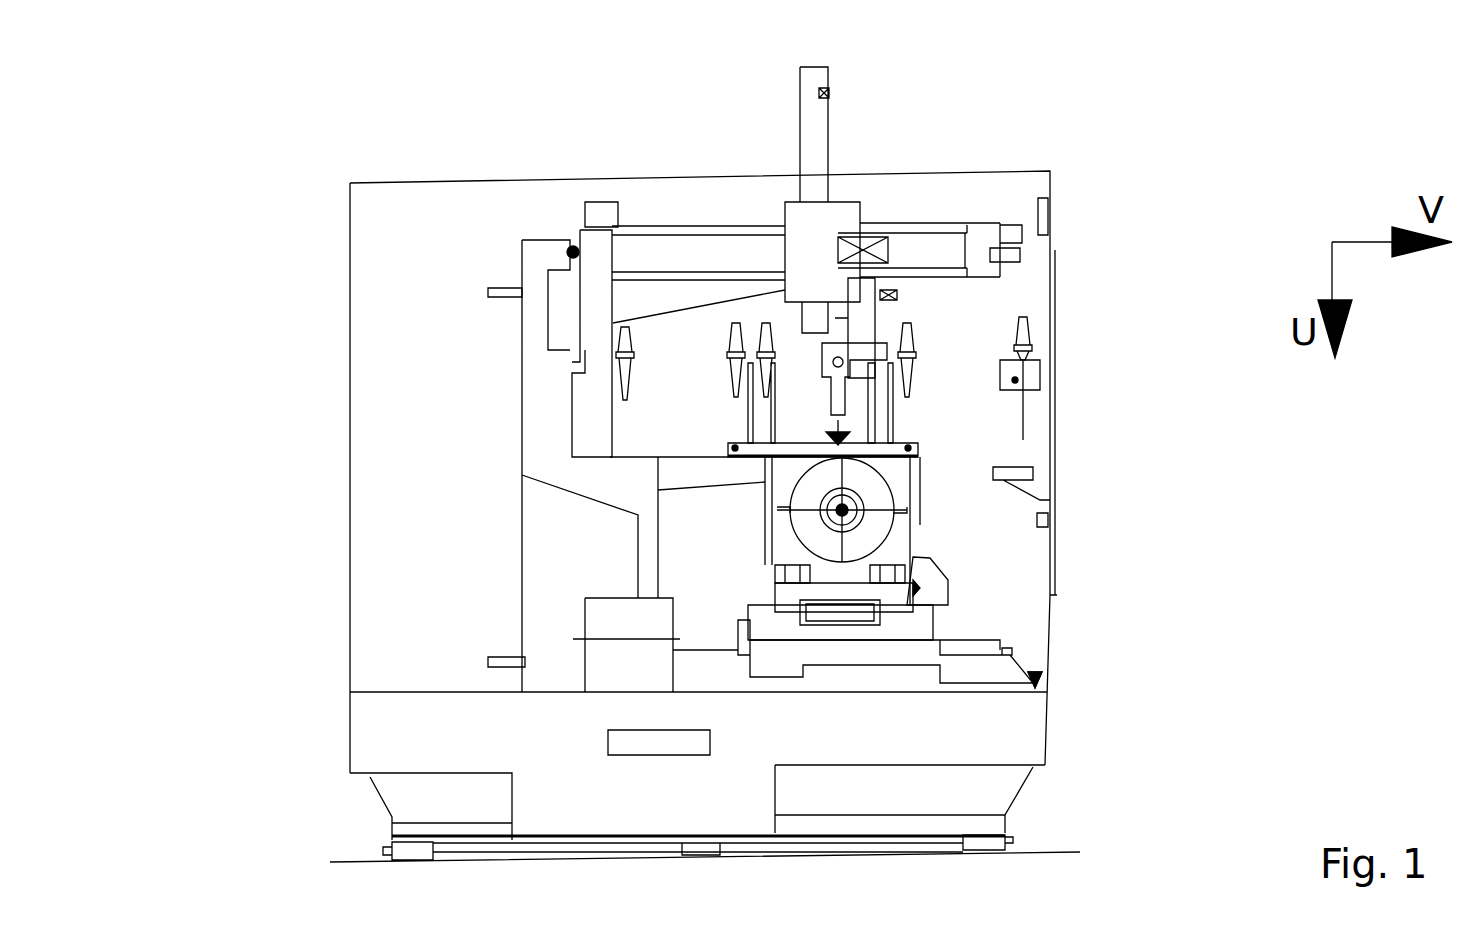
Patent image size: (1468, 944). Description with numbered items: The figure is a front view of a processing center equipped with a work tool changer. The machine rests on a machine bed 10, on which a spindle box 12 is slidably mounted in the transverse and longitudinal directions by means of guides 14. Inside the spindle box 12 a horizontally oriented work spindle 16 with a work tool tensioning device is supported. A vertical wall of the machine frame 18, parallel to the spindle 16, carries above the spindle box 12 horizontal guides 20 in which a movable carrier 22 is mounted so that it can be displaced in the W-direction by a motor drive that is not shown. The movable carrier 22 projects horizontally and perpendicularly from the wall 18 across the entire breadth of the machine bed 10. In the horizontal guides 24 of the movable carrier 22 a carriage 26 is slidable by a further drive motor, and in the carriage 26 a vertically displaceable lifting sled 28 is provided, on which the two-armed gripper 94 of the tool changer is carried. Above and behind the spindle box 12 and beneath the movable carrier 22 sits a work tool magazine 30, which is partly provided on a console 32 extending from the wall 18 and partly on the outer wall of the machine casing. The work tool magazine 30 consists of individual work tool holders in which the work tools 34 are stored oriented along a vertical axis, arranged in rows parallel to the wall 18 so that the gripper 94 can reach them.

The machine bed 10 is at (983, 670).
The spindle box 12 is at (893, 552).
The guides 14 is at (1035, 683).
The work spindle 16 is at (842, 512).
The machine frame wall 18 is at (533, 337).
The horizontal guides 20 is at (587, 365).
The movable carrier 22 is at (663, 257).
The horizontal guides of the movable carrier 24 is at (1005, 260).
The carriage 26 is at (823, 225).
The lifting sled 28 is at (816, 127).
The work tool magazine 30 is at (917, 373).
The console 32 is at (680, 475).
The work tools 34 is at (903, 342).
The gripper 94 is at (848, 373).